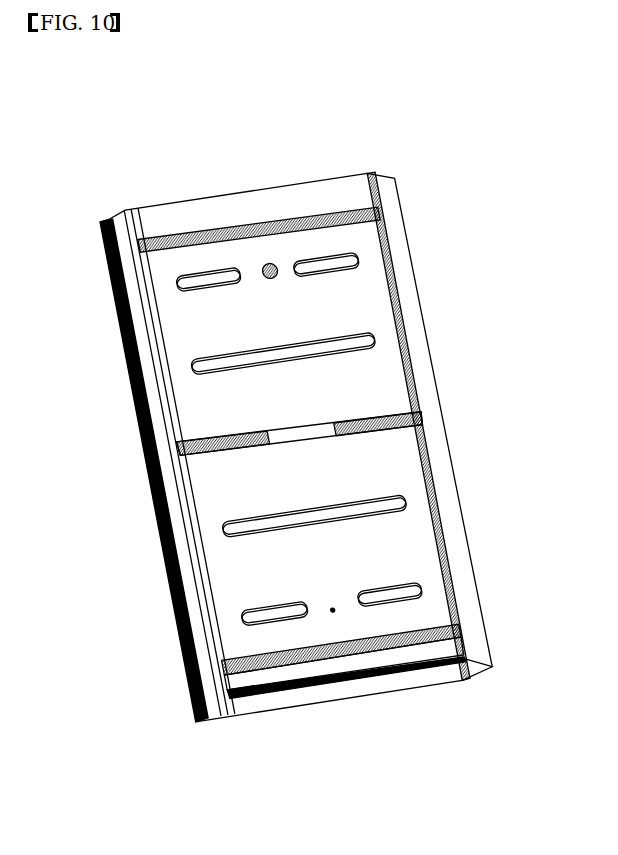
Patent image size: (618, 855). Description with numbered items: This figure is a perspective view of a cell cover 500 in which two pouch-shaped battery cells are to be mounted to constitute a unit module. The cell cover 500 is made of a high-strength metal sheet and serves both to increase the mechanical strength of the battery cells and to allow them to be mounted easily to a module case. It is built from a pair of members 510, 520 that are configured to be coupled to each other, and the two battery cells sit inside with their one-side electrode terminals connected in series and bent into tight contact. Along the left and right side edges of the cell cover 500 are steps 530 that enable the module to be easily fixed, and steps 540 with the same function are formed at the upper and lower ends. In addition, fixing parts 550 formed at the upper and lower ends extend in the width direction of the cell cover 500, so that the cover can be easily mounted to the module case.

The cell cover 500 is at (103, 133).
The member 510 is at (255, 700).
The member 520 is at (337, 700).
The steps 530 is at (187, 580).
The steps 540 is at (284, 203).
The fixing parts 550 is at (435, 630).